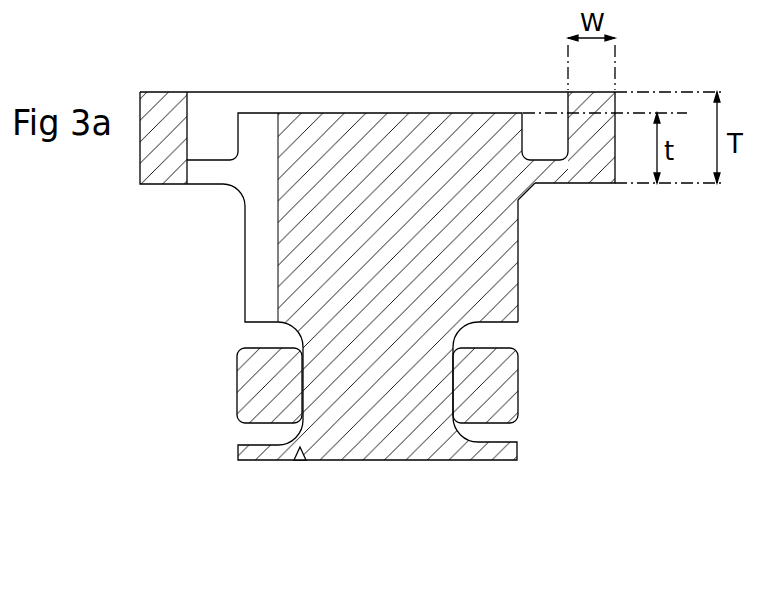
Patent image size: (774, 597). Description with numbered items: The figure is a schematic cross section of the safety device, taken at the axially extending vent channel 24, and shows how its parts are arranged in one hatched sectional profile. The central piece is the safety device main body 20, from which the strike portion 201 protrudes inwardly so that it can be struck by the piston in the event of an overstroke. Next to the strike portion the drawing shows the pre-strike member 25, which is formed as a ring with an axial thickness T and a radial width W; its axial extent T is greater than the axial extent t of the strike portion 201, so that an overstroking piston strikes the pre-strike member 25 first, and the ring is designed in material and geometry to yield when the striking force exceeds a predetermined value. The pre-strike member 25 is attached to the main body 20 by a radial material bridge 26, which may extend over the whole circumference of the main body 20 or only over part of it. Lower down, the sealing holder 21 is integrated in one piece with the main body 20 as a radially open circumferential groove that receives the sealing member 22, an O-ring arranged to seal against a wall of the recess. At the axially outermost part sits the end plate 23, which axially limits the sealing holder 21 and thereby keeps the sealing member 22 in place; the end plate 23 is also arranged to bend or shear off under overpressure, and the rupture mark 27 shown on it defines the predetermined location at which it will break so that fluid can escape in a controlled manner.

The safety device main body 20 is at (507, 255).
The strike portion 201 is at (445, 117).
The sealing holder 21 is at (478, 332).
The sealing member 22 is at (503, 392).
The end plate 23 is at (515, 450).
The vent channel 24 is at (252, 197).
The pre-strike member 25 is at (597, 132).
The radial material bridge 26 is at (550, 172).
The rupture mark 27 is at (307, 458).